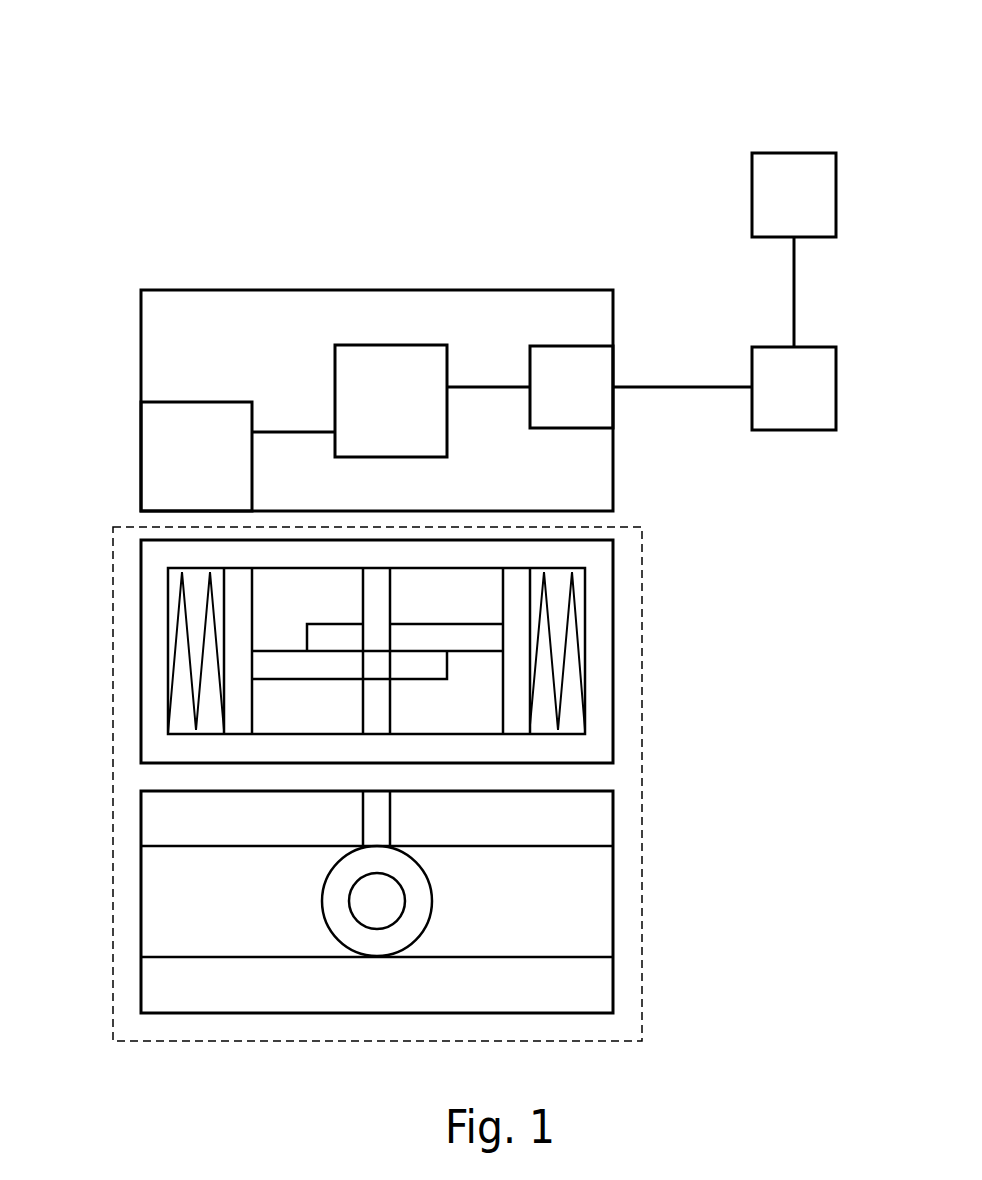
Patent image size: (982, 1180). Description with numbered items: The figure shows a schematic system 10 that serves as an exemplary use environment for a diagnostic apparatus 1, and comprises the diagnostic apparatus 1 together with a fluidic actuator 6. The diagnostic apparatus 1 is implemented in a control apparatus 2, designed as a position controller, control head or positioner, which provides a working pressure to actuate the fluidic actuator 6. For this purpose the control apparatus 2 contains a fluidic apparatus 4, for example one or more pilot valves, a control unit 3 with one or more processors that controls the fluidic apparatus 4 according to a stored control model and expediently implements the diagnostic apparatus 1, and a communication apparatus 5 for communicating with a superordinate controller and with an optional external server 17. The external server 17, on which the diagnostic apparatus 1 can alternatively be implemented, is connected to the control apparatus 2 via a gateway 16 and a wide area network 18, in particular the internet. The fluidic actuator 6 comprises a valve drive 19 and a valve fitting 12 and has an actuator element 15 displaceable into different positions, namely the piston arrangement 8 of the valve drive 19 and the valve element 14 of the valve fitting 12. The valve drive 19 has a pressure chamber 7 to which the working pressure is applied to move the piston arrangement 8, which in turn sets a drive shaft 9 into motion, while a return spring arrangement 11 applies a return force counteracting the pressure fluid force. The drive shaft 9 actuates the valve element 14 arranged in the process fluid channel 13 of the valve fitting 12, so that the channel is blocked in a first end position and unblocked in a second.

The diagnostic apparatus 1 is at (488, 332).
The control apparatus 2 is at (613, 483).
The control unit 3 is at (391, 401).
The fluidic apparatus 4 is at (196, 456).
The communication apparatus 5 is at (571, 387).
The fluidic actuator 6 is at (643, 733).
The pressure chamber 7 is at (477, 721).
The piston arrangement 8 is at (378, 681).
The drive shaft 9 is at (372, 602).
The system 10 is at (219, 133).
The return spring arrangement 11 is at (172, 613).
The valve fitting 12 is at (613, 987).
The process fluid channel 13 is at (580, 910).
The valve element 14 is at (333, 916).
The actuator element 15 is at (378, 762).
The gateway 16 is at (794, 388).
The external server 17 is at (794, 195).
The wide area network 18 is at (793, 291).
The valve drive 19 is at (140, 735).